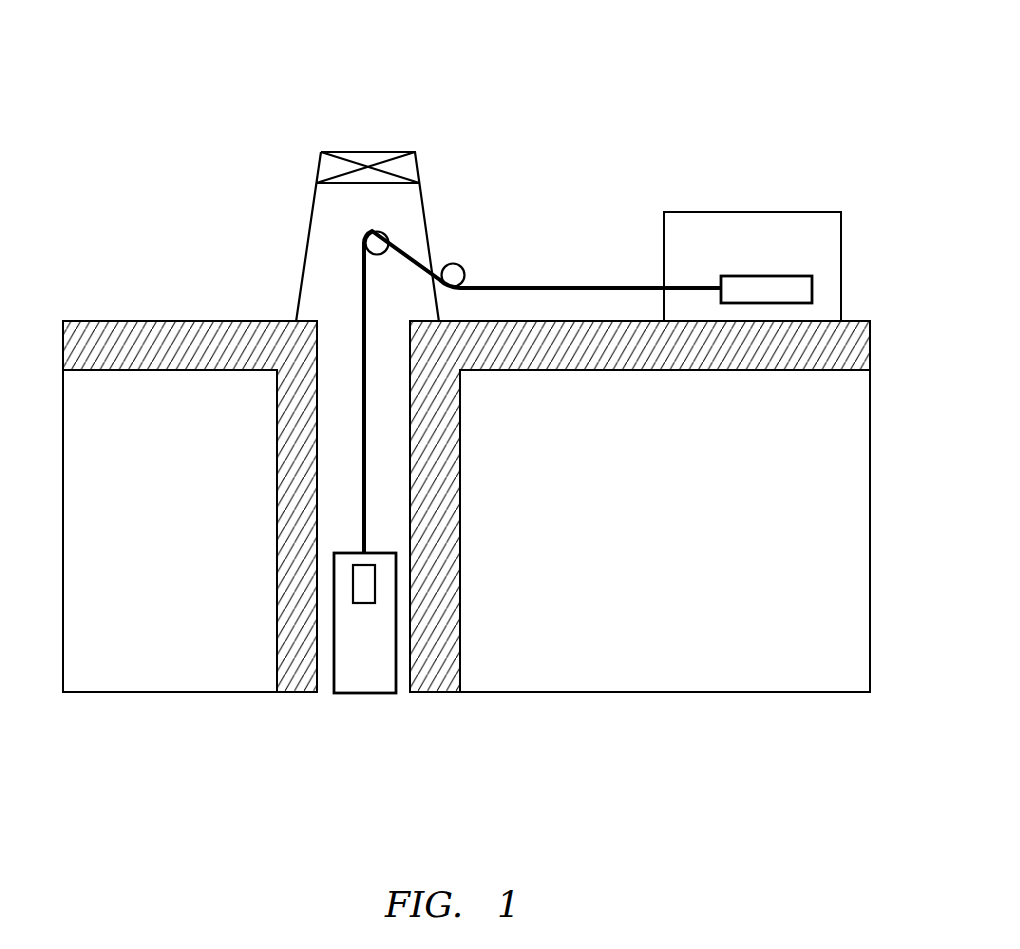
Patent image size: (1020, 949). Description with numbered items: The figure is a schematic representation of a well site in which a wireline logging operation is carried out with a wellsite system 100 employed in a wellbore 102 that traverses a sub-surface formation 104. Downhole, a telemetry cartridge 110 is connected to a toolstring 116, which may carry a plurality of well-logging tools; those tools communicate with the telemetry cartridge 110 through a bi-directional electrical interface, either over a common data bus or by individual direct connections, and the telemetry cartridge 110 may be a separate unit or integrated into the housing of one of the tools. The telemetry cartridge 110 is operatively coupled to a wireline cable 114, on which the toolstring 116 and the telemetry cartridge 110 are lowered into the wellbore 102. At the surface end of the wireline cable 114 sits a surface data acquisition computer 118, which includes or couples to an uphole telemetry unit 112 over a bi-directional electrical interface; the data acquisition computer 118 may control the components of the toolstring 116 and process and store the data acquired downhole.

The wellsite system 100 is at (783, 61).
The wellbore 102 is at (449, 511).
The sub-surface formation 104 is at (705, 527).
The downhole telemetry cartridge 110 is at (364, 604).
The uphole telemetry unit 112 is at (738, 276).
The wireline cable 114 is at (522, 287).
The toolstring 116 is at (342, 693).
The surface data acquisition computer 118 is at (727, 212).